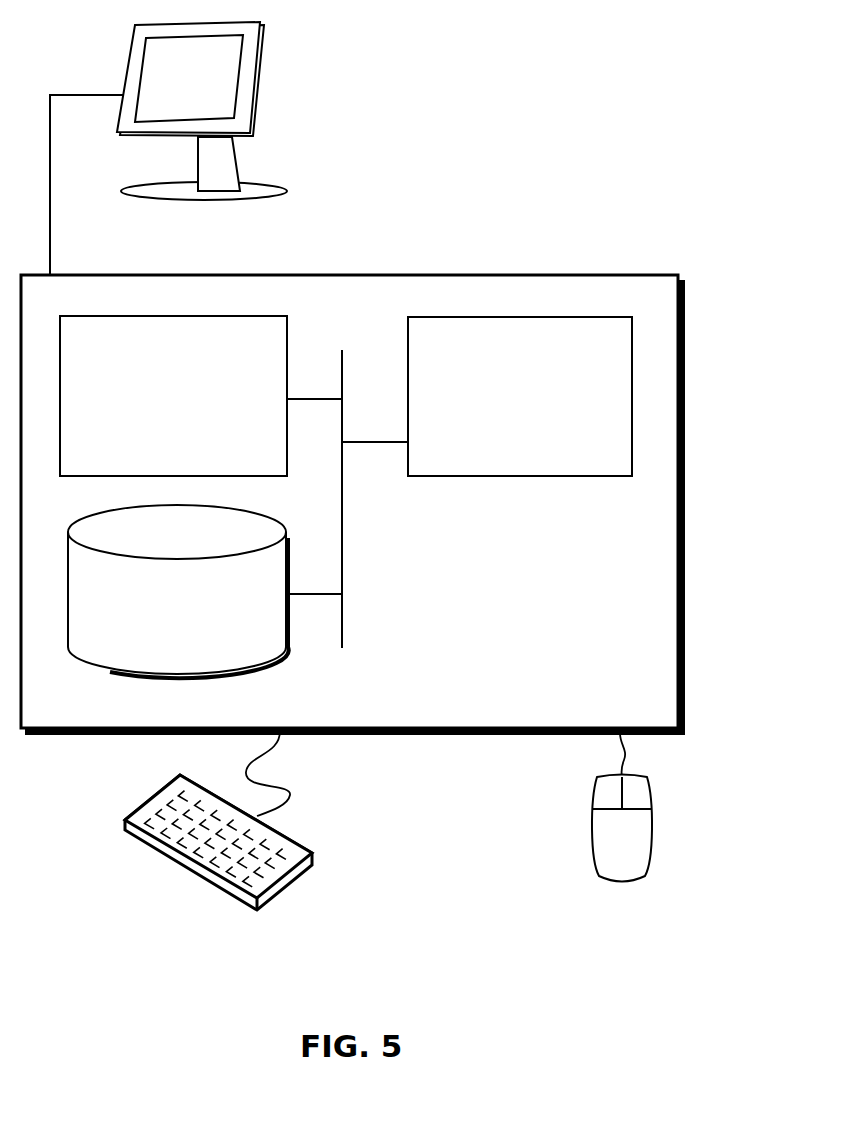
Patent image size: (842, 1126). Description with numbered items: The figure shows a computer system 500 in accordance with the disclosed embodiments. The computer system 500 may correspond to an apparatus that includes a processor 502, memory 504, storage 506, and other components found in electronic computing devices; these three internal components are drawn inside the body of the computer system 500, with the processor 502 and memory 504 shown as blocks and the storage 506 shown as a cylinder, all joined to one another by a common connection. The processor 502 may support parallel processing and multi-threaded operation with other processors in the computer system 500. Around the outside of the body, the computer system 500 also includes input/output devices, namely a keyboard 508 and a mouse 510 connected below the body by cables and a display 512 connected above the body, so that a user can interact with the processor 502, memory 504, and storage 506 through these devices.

The computer system 500 is at (397, 254).
The processor 502 is at (503, 409).
The memory 504 is at (153, 409).
The storage 506 is at (160, 617).
The keyboard 508 is at (145, 838).
The mouse 510 is at (601, 850).
The display 512 is at (168, 148).